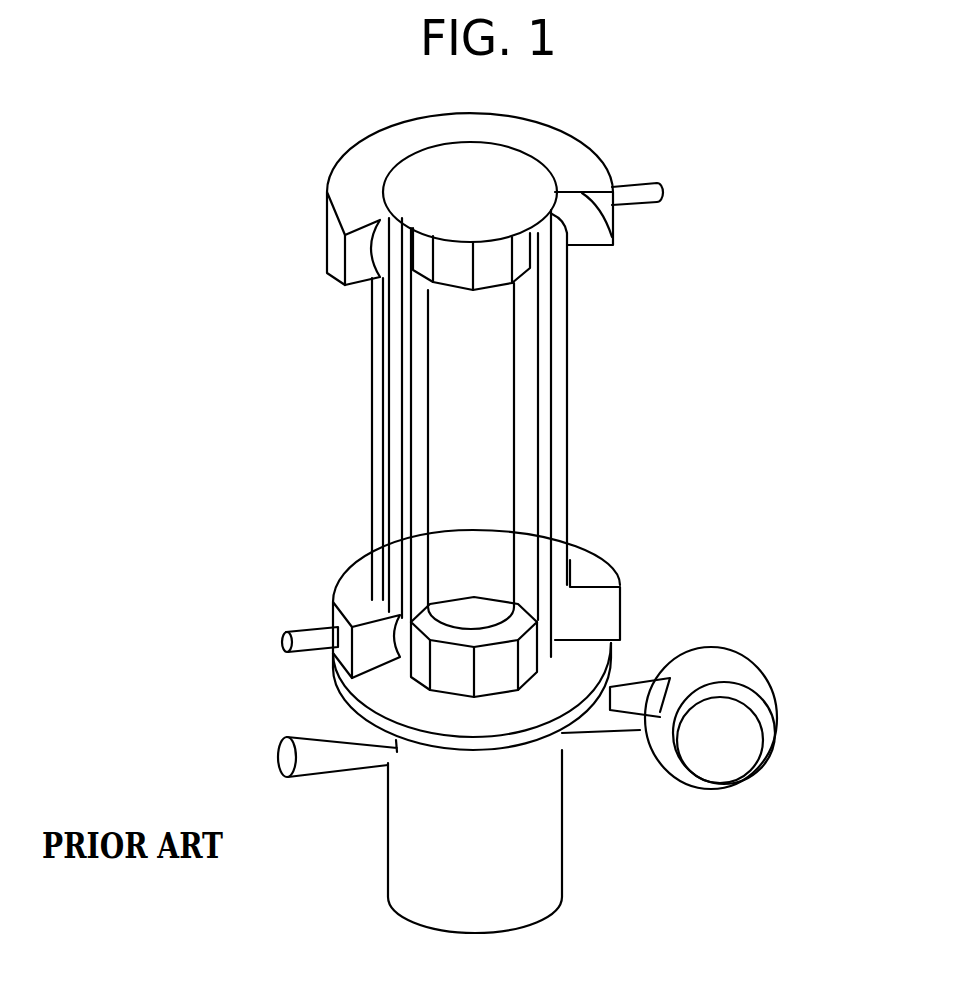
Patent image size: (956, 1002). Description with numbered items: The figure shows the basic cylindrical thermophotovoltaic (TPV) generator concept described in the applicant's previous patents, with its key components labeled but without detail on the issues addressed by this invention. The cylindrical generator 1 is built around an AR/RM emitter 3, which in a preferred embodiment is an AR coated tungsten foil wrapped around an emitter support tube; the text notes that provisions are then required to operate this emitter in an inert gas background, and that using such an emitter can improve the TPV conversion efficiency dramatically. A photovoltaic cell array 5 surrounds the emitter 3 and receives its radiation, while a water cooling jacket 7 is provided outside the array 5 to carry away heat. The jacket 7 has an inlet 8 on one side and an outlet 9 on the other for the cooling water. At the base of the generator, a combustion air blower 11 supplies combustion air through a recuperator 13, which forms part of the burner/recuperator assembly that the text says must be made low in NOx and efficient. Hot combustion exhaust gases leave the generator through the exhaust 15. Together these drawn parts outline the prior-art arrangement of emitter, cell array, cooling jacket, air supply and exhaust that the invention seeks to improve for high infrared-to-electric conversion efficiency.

The cylindrical generator 1 is at (617, 315).
The AR/RM emitter 3 is at (467, 433).
The photovoltaic cell array 5 is at (538, 353).
The water cooling jacket 7 is at (562, 468).
The inlet 8 is at (295, 633).
The outlet 9 is at (635, 180).
The combustion air blower 11 is at (732, 762).
The recuperator 13 is at (538, 847).
The exhaust 15 is at (302, 743).